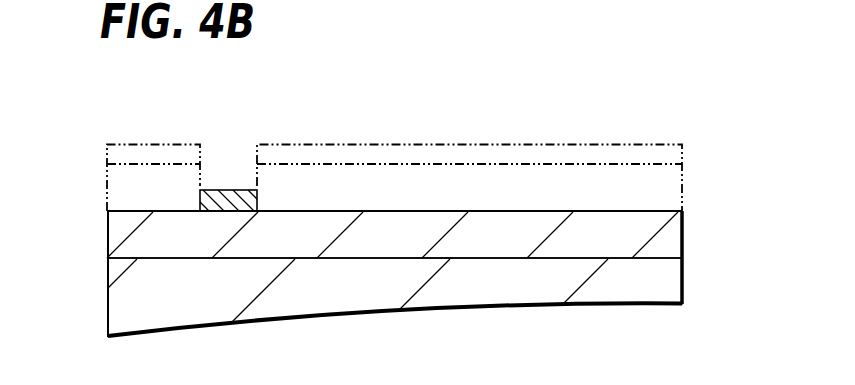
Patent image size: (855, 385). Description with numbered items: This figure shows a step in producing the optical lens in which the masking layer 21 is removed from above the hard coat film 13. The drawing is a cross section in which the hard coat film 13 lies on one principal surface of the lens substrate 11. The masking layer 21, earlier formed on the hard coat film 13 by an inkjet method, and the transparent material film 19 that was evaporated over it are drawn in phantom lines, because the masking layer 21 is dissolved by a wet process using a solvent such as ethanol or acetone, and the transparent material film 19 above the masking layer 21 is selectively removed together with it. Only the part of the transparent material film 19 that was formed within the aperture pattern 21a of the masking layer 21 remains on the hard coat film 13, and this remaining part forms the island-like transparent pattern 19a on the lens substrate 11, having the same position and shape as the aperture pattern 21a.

The lens substrate 11 is at (477, 290).
The hard coat film 13 is at (672, 238).
The transparent material film 19 is at (138, 144).
The transparent pattern 19a is at (225, 190).
The masking layer 21 is at (173, 164).
The aperture pattern 21a is at (217, 177).